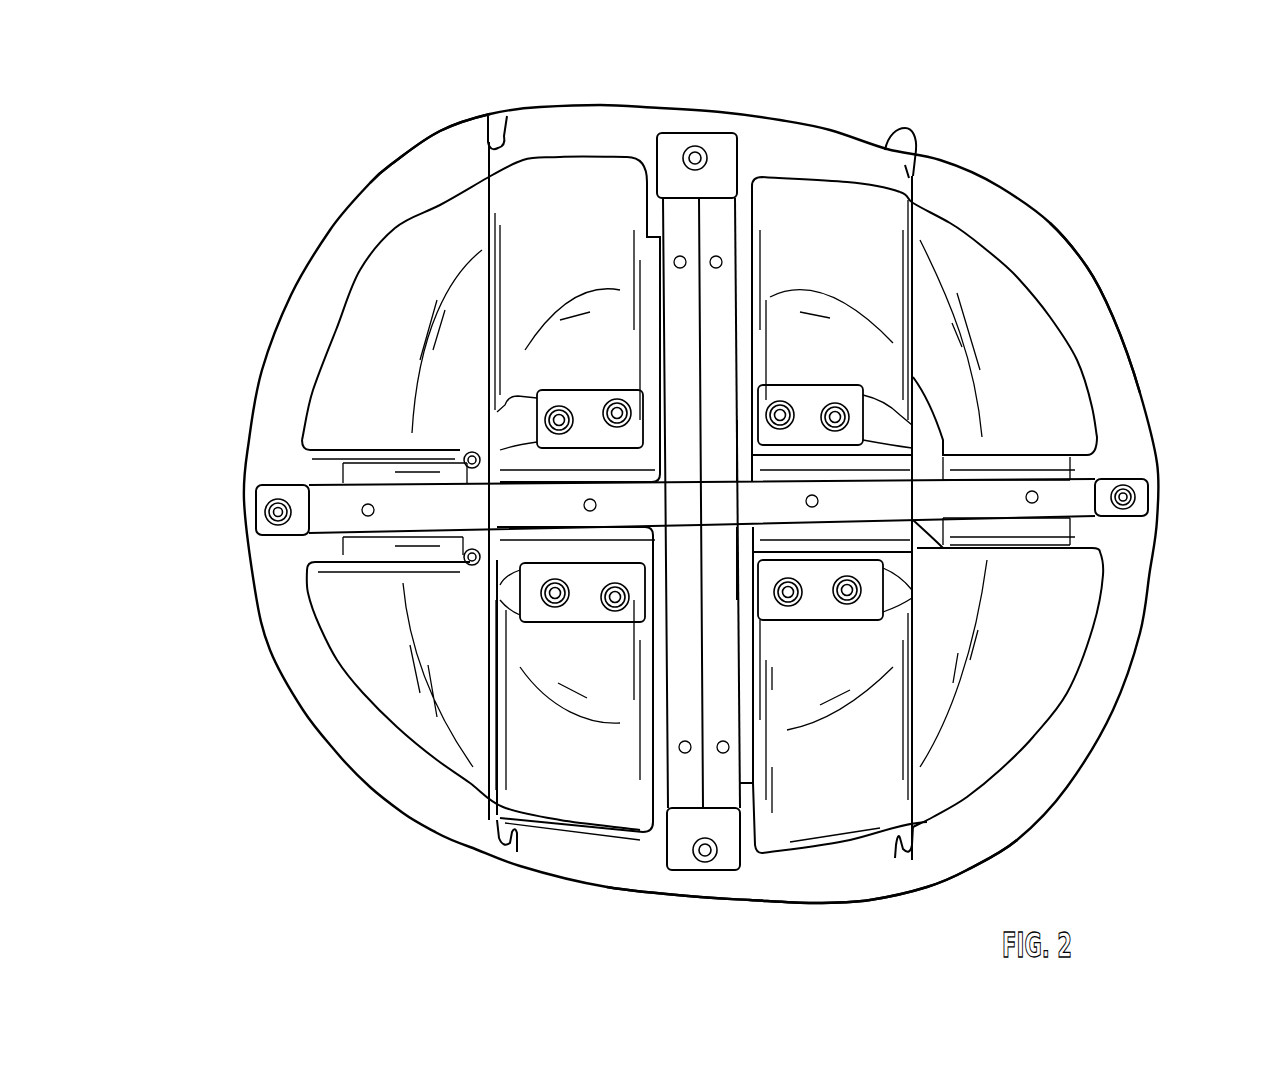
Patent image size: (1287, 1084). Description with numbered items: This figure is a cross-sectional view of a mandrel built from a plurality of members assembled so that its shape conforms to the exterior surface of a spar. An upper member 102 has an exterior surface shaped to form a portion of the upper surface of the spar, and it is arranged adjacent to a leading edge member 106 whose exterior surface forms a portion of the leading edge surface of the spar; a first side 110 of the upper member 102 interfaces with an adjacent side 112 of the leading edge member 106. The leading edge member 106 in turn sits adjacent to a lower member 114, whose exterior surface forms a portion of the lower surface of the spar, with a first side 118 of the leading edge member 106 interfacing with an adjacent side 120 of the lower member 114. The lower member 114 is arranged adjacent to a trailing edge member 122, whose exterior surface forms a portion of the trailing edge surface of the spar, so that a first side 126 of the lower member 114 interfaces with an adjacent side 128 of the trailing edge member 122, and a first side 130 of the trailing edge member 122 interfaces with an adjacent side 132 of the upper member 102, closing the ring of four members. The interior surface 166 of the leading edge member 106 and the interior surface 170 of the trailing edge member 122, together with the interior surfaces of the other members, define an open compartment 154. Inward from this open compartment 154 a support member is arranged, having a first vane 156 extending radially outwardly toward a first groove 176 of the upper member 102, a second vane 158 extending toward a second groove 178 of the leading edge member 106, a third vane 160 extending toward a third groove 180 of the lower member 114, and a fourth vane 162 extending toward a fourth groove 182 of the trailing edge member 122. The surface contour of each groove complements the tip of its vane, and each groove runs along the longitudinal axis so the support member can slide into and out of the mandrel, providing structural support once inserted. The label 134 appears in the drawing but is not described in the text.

The upper member 102 is at (575, 125).
The leading edge member 106 is at (262, 443).
The first side of the upper member 110 is at (500, 128).
The adjacent side of the leading edge member 112 is at (465, 150).
The lower member 114 is at (745, 883).
The first side of the leading edge member 118 is at (497, 825).
The adjacent side of the lower member 120 is at (515, 843).
The trailing edge member 122 is at (1065, 298).
The first side of the lower member 126 is at (893, 883).
The adjacent side of the trailing edge member 128 is at (900, 850).
The first side of the trailing edge member 130 is at (857, 188).
The adjacent side of the upper member 132 is at (905, 140).
The lower right outer panel 134 is at (893, 177).
The open compartment 154 is at (423, 687).
The first vane 156 is at (703, 253).
The second vane 158 is at (333, 515).
The third vane 160 is at (692, 782).
The fourth vane 162 is at (1067, 488).
The interior surface of the leading edge member 166 is at (383, 343).
The interior surface of the trailing edge member 170 is at (1043, 368).
The first groove 176 is at (710, 183).
The second groove 178 is at (307, 512).
The third groove 180 is at (710, 800).
The fourth groove 182 is at (1104, 512).